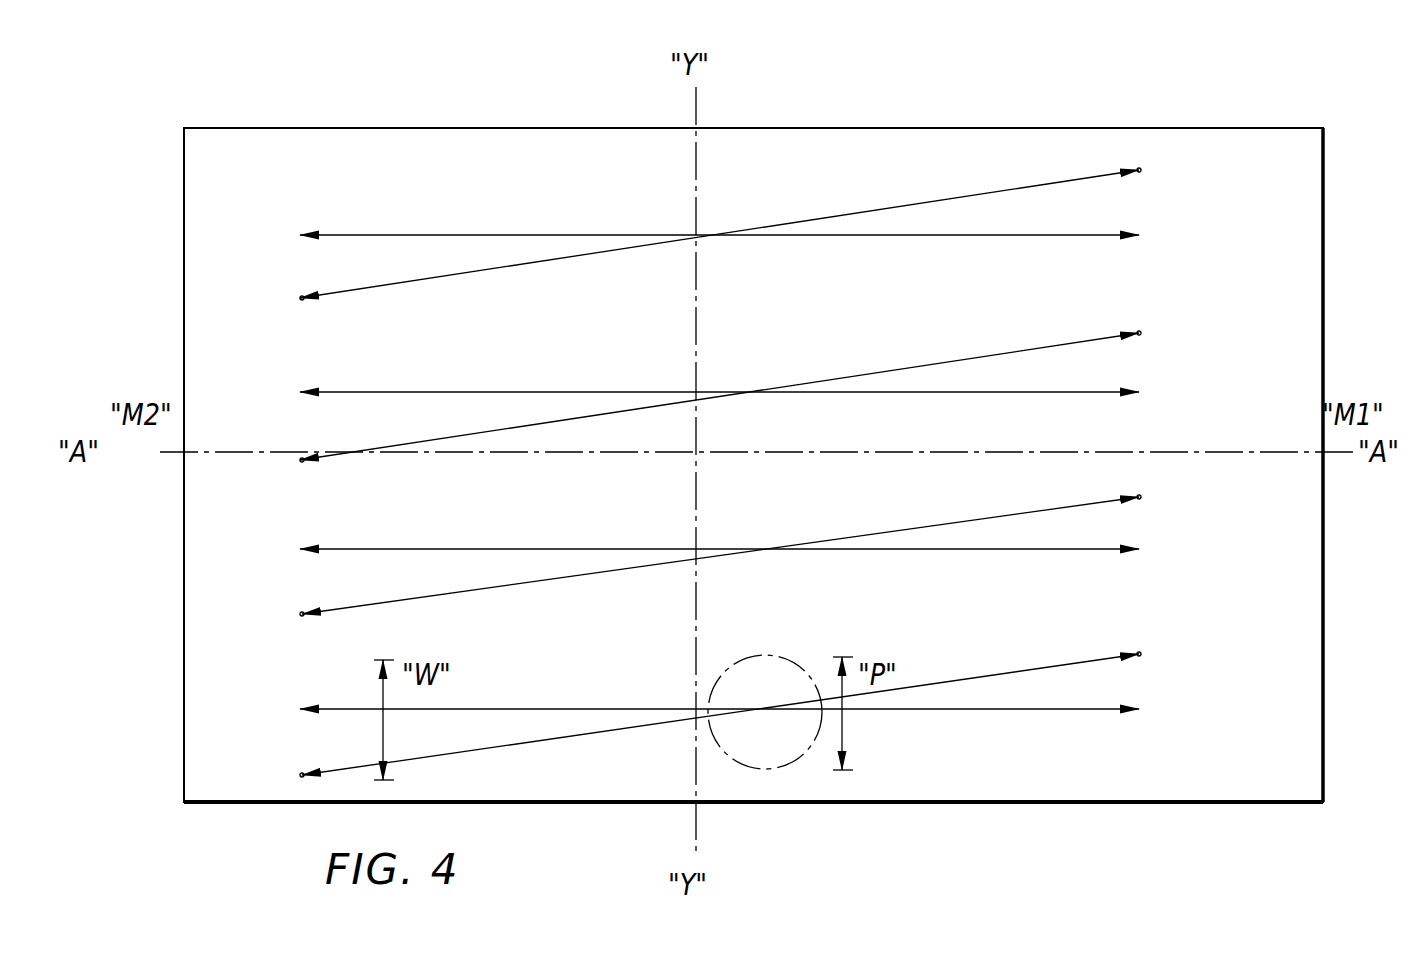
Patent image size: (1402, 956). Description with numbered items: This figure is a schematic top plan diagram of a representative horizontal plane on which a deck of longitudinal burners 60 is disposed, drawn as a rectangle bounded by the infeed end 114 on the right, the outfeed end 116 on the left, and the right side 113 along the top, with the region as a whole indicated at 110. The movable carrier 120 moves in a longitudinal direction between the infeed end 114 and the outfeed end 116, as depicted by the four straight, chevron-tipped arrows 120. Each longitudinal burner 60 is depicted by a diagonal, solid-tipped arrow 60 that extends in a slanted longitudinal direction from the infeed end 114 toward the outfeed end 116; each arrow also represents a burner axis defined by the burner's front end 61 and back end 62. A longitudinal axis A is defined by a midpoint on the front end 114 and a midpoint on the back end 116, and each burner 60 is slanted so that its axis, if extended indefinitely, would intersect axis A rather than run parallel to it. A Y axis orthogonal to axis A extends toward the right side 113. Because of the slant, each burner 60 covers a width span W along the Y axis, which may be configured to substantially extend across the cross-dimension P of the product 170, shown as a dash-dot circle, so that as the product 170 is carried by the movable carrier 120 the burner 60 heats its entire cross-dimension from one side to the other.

The scan field / target area 110 is at (378, 108).
The right side 113 is at (508, 128).
The infeed end 114 is at (1324, 752).
The outfeed end 116 is at (184, 724).
The movable carrier 120 is at (1000, 237).
The longitudinal burner 60 is at (620, 250).
The front end 61 is at (1135, 170).
The back end 62 is at (310, 302).
The product 170 is at (780, 656).